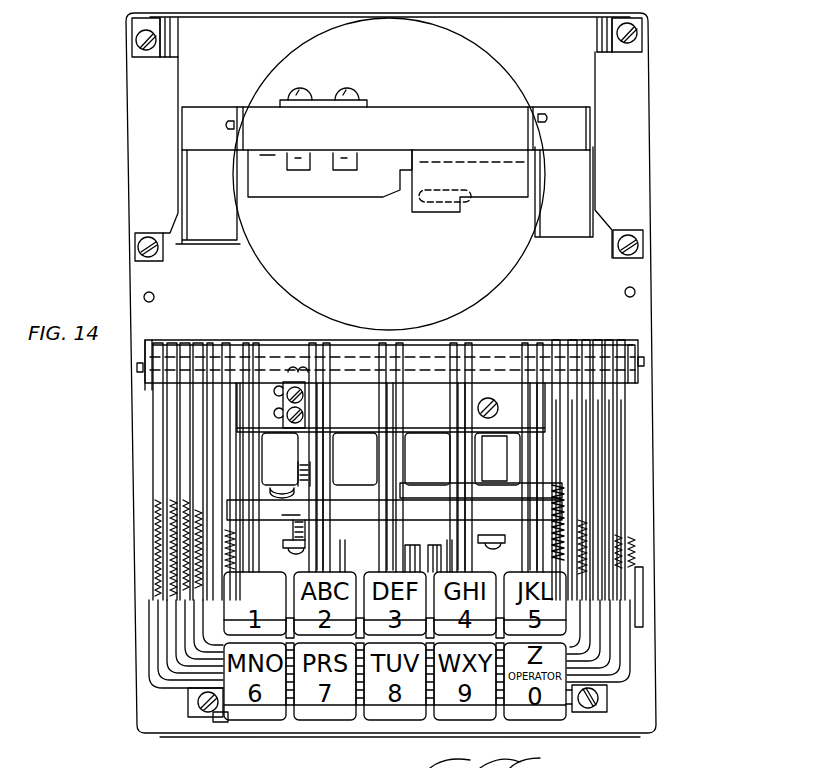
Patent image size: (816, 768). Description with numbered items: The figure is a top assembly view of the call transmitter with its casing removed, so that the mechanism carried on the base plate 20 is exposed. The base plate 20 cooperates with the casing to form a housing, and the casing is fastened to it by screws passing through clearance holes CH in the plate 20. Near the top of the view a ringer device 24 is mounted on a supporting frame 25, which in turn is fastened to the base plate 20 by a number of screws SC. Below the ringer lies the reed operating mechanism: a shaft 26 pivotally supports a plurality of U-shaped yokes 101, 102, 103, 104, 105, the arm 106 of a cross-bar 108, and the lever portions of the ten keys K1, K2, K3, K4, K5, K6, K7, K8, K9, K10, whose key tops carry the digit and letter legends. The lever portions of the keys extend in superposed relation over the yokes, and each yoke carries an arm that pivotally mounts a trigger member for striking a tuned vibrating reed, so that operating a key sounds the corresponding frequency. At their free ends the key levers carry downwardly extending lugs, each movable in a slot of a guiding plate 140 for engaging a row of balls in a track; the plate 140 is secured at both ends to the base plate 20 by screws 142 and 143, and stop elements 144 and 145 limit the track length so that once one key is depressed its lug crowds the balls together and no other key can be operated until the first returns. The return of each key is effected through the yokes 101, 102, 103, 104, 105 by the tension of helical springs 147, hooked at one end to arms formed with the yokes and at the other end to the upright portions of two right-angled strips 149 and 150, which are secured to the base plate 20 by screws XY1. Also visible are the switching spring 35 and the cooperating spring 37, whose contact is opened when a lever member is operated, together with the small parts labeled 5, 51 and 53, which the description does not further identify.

The base plate 20 is at (652, 678).
The screws SC is at (138, 40).
The clearance holes CH is at (143, 297).
The ringer device 24 is at (528, 213).
The supporting frame 25 is at (582, 197).
The shaft 26 is at (140, 366).
The U-shaped yoke 101 is at (212, 410).
The U-shaped yoke 102 is at (200, 432).
The U-shaped yoke 103 is at (190, 455).
The U-shaped yoke 104 is at (180, 470).
The U-shaped yoke 105 is at (166, 492).
The arm of cross-bar 106 is at (228, 343).
The key K1 is at (250, 343).
The key K2 is at (312, 343).
The key K3 is at (384, 343).
The key K4 is at (453, 343).
The key K5 is at (525, 343).
The key K6 is at (259, 343).
The key K7 is at (327, 343).
The key K8 is at (400, 343).
The key K9 is at (470, 343).
The key K10 is at (540, 343).
The helical springs 147 is at (180, 538).
The right-angled strip 150 is at (640, 573).
The screws XY1 is at (207, 630).
The right-angled strip 149 is at (168, 627).
The cross-bar 108 is at (394, 527).
The spring 37 is at (300, 478).
The switching spring 35 is at (295, 528).
The contact 5 is at (283, 520).
The latch 51 is at (290, 545).
The latch 53 is at (492, 544).
The screw 142 is at (198, 700).
The stop element 144 is at (205, 716).
The guiding plate 140 is at (219, 723).
The stop element 145 is at (600, 700).
The screw 143 is at (592, 706).